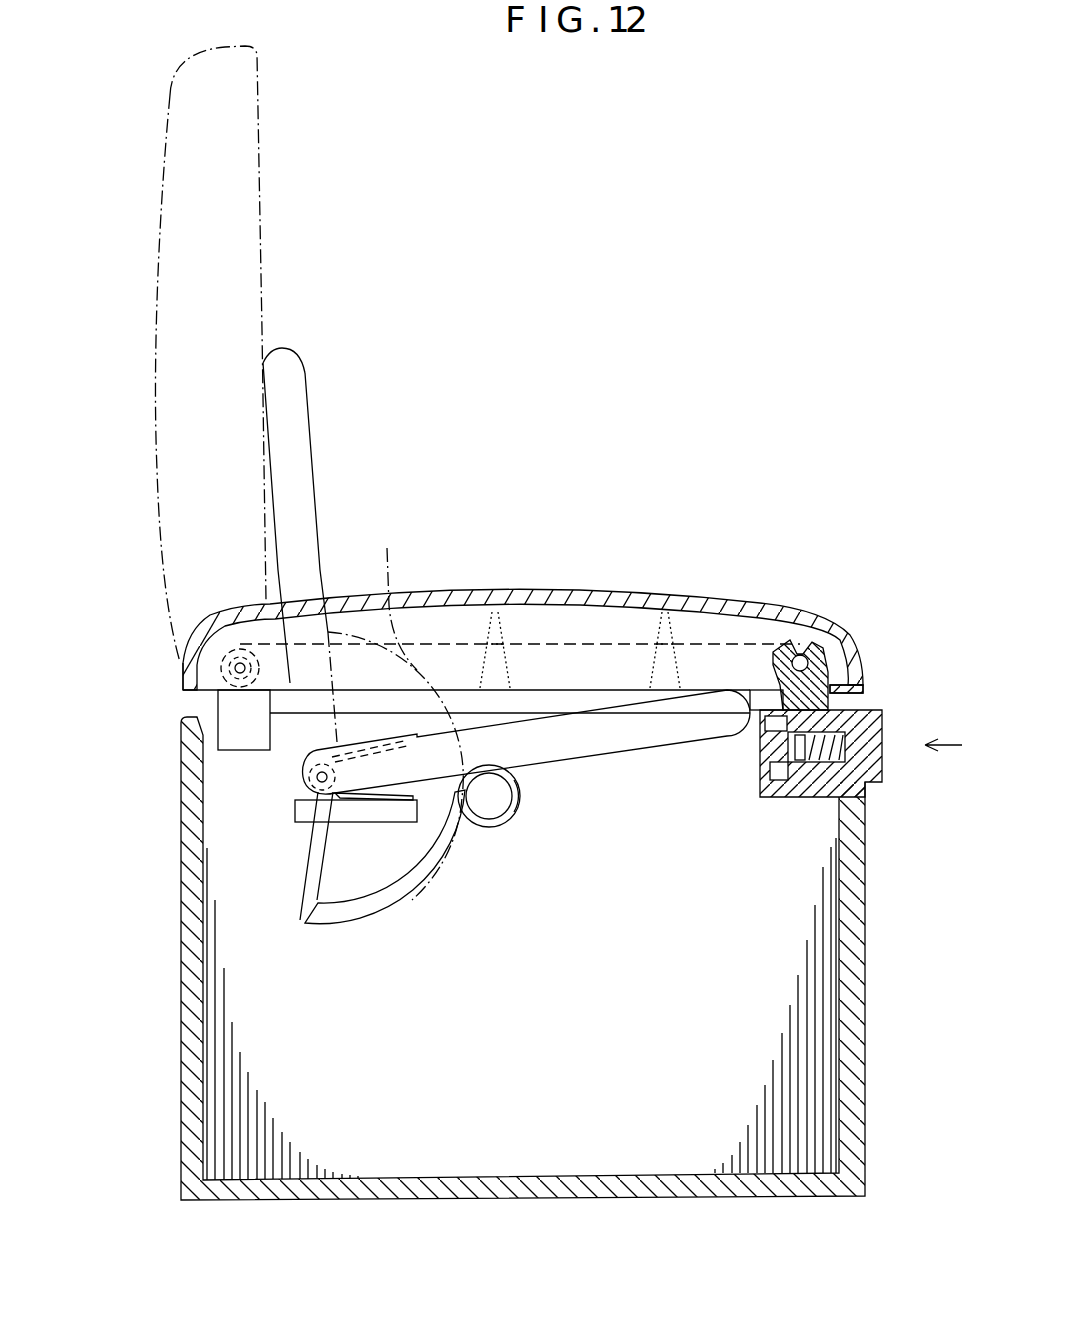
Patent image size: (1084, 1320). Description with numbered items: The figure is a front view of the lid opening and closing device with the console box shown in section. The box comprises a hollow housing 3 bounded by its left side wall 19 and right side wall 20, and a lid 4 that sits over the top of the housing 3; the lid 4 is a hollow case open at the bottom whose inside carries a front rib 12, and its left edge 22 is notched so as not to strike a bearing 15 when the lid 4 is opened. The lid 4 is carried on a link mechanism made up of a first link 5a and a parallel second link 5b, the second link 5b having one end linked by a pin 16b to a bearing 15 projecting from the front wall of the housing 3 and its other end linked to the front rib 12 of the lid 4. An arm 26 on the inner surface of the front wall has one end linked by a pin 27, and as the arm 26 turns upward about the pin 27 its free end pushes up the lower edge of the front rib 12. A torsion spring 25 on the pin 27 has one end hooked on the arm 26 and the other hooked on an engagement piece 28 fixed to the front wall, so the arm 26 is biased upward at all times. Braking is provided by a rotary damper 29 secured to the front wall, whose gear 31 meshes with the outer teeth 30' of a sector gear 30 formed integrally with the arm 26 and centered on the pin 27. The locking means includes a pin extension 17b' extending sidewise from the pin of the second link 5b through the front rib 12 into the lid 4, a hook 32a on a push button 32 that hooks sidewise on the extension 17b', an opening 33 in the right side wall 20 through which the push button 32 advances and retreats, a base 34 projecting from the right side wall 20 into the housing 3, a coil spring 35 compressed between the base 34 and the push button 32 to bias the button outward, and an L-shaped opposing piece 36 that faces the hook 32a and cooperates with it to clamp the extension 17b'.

The housing 3 is at (520, 958).
The lid 4 is at (248, 190).
The first link 5a is at (413, 592).
The second link 5b is at (332, 687).
The front rib 12 is at (623, 625).
The bearing 15 is at (218, 712).
The pin 16b is at (238, 662).
The pin extension 17b' is at (881, 629).
The left side wall 19 is at (180, 870).
The right side wall 20 is at (853, 957).
The left edge 22 is at (183, 664).
The torsion spring 25 is at (392, 798).
The arm 26 is at (302, 410).
The pin 27 is at (305, 778).
The engagement piece 28 is at (296, 812).
The rotary damper 29 is at (505, 826).
The sector gear 30 is at (382, 900).
The outer teeth 30' is at (399, 800).
The gear 31 is at (520, 800).
The push button 32 is at (853, 769).
The hook 32a is at (770, 654).
The opening 33 is at (868, 785).
The base 34 is at (768, 798).
The coil spring 35 is at (845, 750).
The L-shaped opposing piece 36 is at (818, 642).